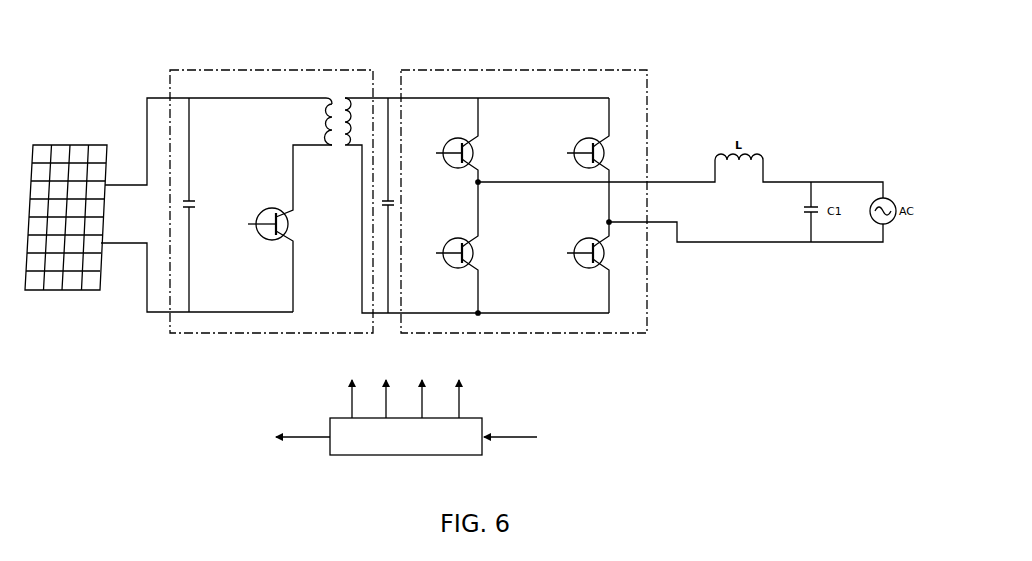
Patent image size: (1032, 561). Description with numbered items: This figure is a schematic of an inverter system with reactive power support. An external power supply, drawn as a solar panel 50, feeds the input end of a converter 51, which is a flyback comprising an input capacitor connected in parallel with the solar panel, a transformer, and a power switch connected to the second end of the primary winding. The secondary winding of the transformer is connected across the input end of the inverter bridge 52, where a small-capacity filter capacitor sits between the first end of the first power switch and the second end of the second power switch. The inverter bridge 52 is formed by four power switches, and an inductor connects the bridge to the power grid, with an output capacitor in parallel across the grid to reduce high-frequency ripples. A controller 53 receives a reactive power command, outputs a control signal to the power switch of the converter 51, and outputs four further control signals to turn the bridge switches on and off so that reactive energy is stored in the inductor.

The solar panel / photovoltaic module 50 is at (73, 145).
The converter 51 is at (228, 70).
The inverter bridge 52 is at (457, 70).
The controller 53 is at (458, 455).